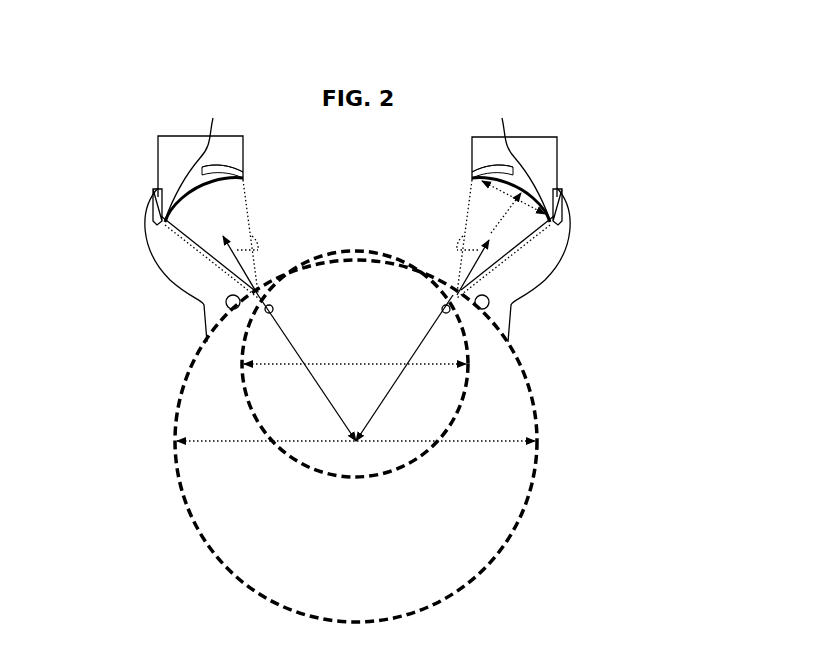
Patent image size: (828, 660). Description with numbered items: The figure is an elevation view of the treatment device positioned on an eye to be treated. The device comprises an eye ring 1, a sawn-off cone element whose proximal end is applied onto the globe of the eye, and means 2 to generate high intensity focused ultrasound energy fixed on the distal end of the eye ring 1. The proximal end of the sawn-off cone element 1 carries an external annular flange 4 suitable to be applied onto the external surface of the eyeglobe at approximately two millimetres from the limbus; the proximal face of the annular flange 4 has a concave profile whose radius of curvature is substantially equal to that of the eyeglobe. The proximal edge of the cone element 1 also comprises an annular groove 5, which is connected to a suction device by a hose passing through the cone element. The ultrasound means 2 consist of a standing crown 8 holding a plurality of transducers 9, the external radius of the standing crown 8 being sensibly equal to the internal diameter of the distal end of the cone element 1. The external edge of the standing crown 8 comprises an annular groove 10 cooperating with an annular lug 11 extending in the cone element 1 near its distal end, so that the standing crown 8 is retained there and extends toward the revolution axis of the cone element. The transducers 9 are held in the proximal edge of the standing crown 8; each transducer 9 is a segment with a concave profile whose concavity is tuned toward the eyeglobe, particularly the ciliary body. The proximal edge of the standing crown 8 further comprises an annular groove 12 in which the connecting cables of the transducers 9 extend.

The eye ring 1 is at (130, 290).
The means to generate high intensity focused ultrasound energy 2 is at (573, 158).
The external annular flange 4 is at (510, 325).
The annular groove 5 is at (226, 302).
The standing crown 8 is at (182, 136).
The transducers 9 is at (202, 170).
The annular groove 10 is at (160, 214).
The annular lug 11 is at (556, 220).
The annular groove 12 is at (357, 159).